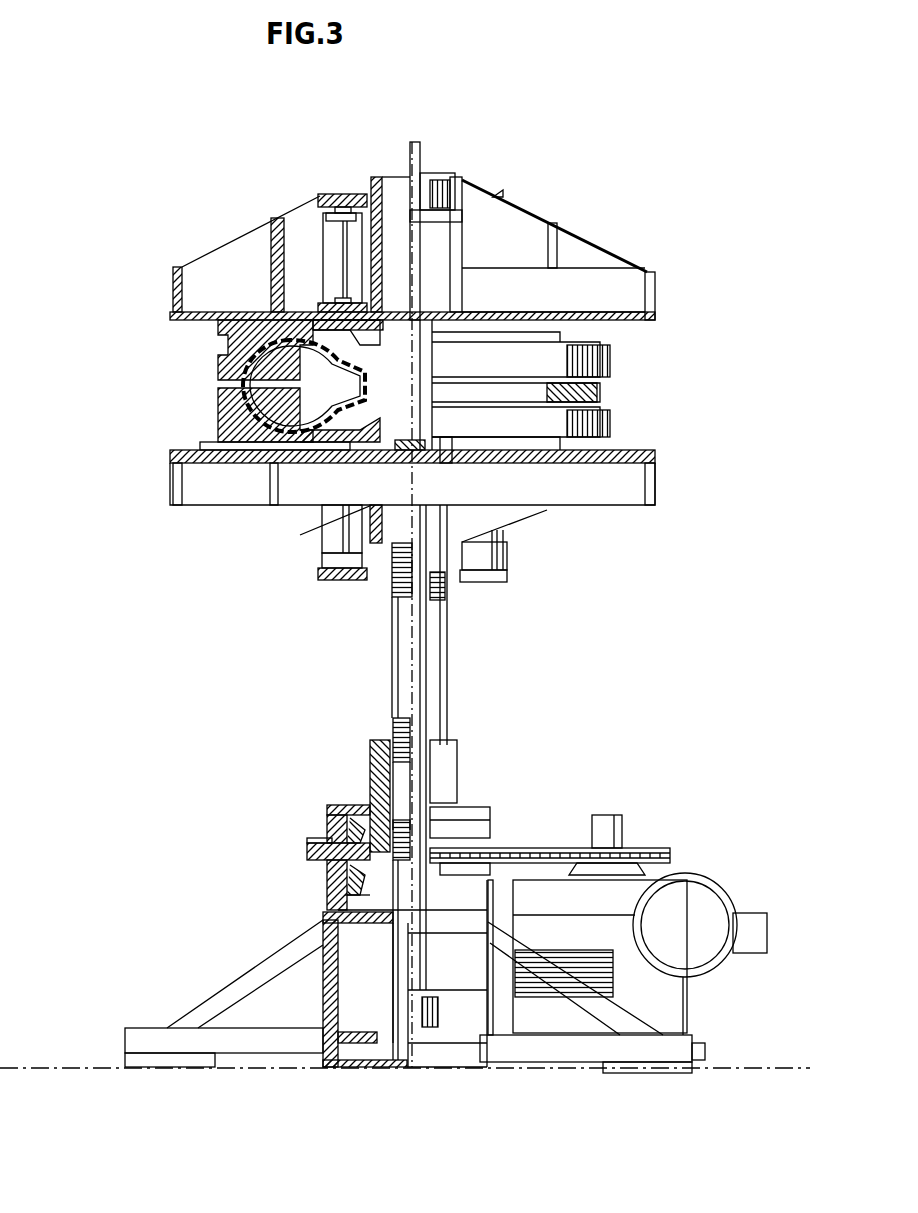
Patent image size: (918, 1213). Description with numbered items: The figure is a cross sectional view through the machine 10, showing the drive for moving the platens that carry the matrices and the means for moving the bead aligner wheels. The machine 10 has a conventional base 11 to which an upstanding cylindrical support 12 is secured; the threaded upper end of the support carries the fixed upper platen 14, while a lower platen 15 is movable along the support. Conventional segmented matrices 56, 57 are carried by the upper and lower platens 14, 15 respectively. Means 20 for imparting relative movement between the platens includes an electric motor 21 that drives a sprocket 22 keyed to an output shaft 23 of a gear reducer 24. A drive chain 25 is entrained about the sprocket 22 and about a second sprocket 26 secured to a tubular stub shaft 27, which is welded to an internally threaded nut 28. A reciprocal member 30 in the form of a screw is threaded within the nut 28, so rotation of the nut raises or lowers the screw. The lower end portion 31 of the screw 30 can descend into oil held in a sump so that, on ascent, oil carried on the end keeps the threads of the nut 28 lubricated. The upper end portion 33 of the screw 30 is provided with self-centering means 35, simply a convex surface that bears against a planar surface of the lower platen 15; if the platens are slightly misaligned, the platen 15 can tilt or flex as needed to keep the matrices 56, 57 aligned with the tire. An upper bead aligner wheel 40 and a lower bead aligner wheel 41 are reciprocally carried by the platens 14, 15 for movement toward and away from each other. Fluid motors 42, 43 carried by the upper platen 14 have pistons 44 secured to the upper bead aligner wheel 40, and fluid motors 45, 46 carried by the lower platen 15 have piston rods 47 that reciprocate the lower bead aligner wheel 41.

The machine 10 is at (483, 75).
The base 11 is at (358, 1055).
The cylindrical support 12 is at (430, 665).
The upper platen 14 is at (585, 258).
The lower platen 15 is at (640, 492).
The means for imparting relative movement between the platens 20 is at (680, 812).
The electric motor 21 is at (720, 892).
The sprocket 22 is at (670, 862).
The output shaft 23 is at (622, 830).
The gear reducer 24 is at (665, 994).
The drive chain 25 is at (525, 848).
The sprocket 26 is at (304, 872).
The tubular stub shaft 27 is at (385, 925).
The internally threaded nut 28 is at (375, 758).
The reciprocal member 30 is at (388, 600).
The lower end portion 31 is at (400, 805).
The upper end portion 33 is at (440, 572).
The self-centering means 35 is at (415, 468).
The upper bead aligner wheel 40 is at (430, 372).
The lower bead aligner wheel 41 is at (430, 418).
The fluid motor 42 is at (332, 192).
The fluid motor 43 is at (500, 192).
The piston 44 is at (345, 263).
The fluid motor 45 is at (330, 583).
The fluid motor 46 is at (507, 552).
The piston rod 47 is at (347, 503).
The segmented matrix 56 is at (225, 352).
The segmented matrix 57 is at (226, 405).